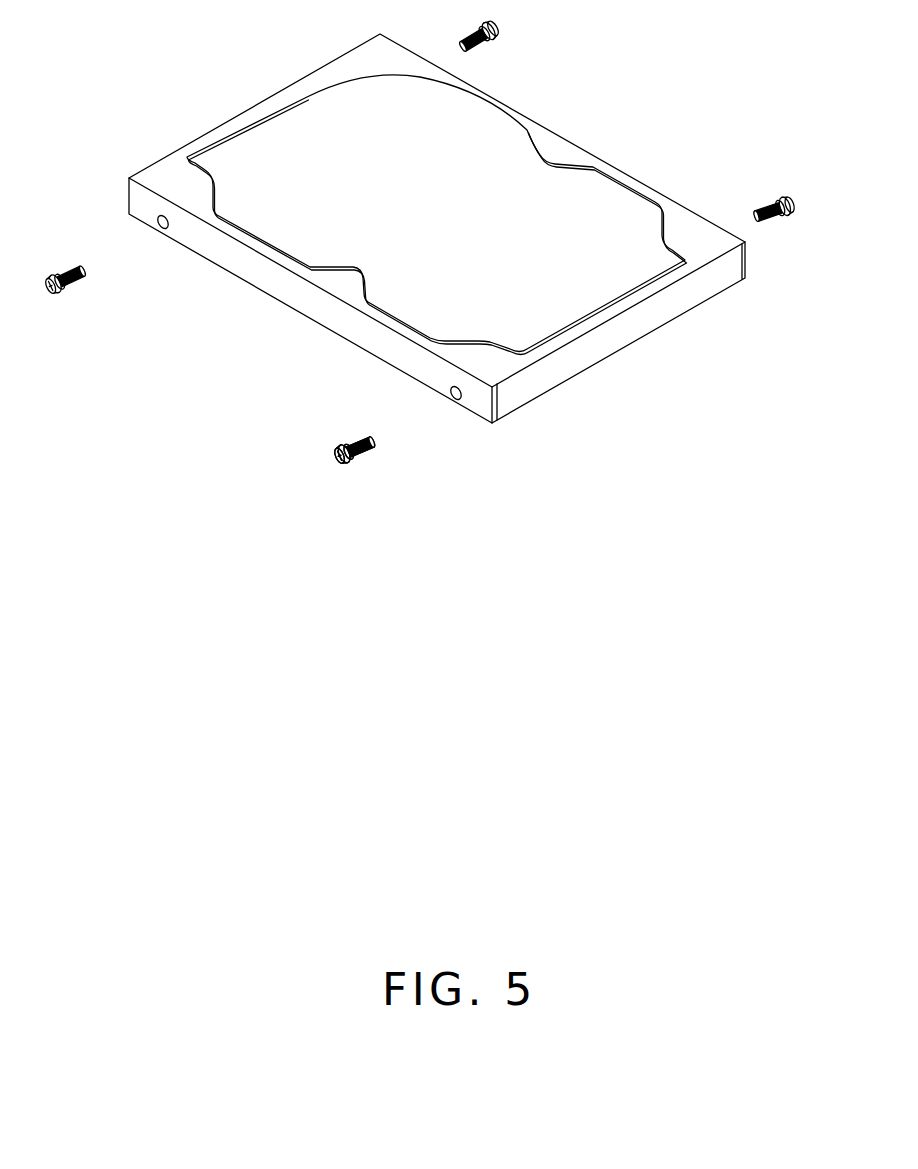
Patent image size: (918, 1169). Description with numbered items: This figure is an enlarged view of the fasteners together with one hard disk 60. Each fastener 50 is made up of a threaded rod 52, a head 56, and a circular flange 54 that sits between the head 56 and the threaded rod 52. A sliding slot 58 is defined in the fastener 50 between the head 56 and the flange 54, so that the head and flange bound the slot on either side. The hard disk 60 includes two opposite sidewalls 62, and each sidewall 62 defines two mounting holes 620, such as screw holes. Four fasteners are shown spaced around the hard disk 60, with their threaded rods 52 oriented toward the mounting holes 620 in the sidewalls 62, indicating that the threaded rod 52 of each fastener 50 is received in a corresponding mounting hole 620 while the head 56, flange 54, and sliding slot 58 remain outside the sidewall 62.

The fastener 50 is at (357, 483).
The threaded rod 52 is at (368, 435).
The circular flange 54 is at (363, 460).
The head 56 is at (340, 462).
The sliding slot 58 is at (350, 438).
The hard disk 60 is at (573, 195).
The sidewall 62 is at (237, 260).
The mounting hole 620 is at (460, 398).